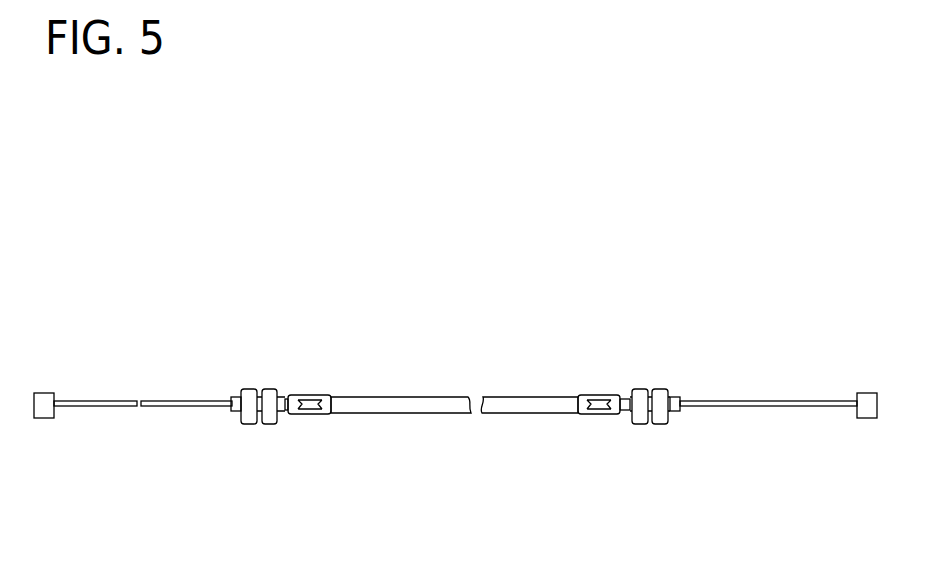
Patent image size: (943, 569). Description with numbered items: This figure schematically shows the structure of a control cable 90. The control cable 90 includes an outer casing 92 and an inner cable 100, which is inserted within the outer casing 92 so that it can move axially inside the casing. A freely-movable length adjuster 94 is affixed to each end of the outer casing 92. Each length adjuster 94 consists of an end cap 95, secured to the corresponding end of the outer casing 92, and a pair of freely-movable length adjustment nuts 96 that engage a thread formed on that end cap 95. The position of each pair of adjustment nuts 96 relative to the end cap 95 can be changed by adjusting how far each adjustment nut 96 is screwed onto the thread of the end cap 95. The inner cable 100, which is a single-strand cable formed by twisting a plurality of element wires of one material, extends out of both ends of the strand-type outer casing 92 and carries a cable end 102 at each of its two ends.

The control cable 90 is at (471, 340).
The outer casing 92 is at (530, 397).
The freely-movable length adjuster 94 is at (252, 370).
The end cap 95 is at (310, 395).
The freely-movable length adjustment nut 96 is at (246, 425).
The inner cable 100 is at (787, 400).
The cable end 102 is at (44, 393).